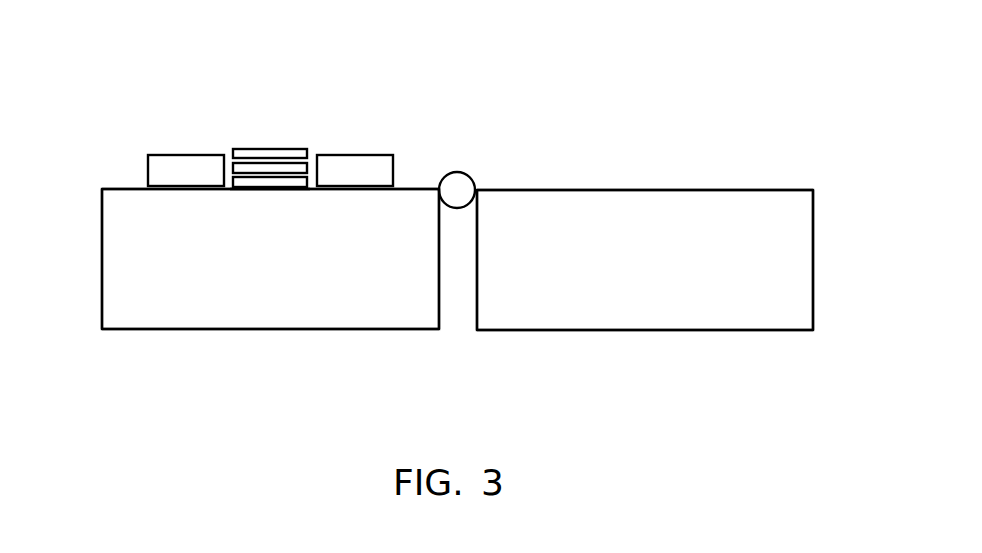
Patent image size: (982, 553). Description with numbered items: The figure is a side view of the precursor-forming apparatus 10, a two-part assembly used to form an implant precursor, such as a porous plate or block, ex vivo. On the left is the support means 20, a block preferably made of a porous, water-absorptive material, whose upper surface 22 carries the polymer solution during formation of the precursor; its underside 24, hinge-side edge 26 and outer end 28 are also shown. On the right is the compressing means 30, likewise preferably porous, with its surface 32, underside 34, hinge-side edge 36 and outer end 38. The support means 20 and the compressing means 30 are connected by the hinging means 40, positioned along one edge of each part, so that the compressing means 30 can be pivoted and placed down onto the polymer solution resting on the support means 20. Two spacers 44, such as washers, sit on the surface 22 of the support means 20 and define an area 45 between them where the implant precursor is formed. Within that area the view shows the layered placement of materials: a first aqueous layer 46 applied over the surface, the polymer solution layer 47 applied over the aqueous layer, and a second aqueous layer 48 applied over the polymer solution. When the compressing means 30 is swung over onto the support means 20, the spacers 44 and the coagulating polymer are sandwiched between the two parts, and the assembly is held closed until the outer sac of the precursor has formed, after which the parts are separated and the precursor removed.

The optical assembly 10 is at (617, 84).
The first substrate 20 is at (127, 257).
The top surface of first substrate 22 is at (114, 188).
The bottom surface of first substrate 24 is at (142, 330).
The side edge of first substrate 26 is at (440, 300).
The end of first substrate 28 is at (102, 315).
The second substrate 30 is at (786, 291).
The top surface of second substrate 32 is at (728, 190).
The bottom surface of second substrate 34 is at (738, 331).
The side edge of second substrate 36 is at (470, 328).
The end of second substrate 38 is at (813, 217).
The optical fiber 40 is at (460, 178).
The bonding pads 44 is at (172, 155).
The mounting surface region 45 is at (253, 191).
The first layer 46 is at (246, 181).
The second layer 47 is at (276, 168).
The third layer 48 is at (297, 153).